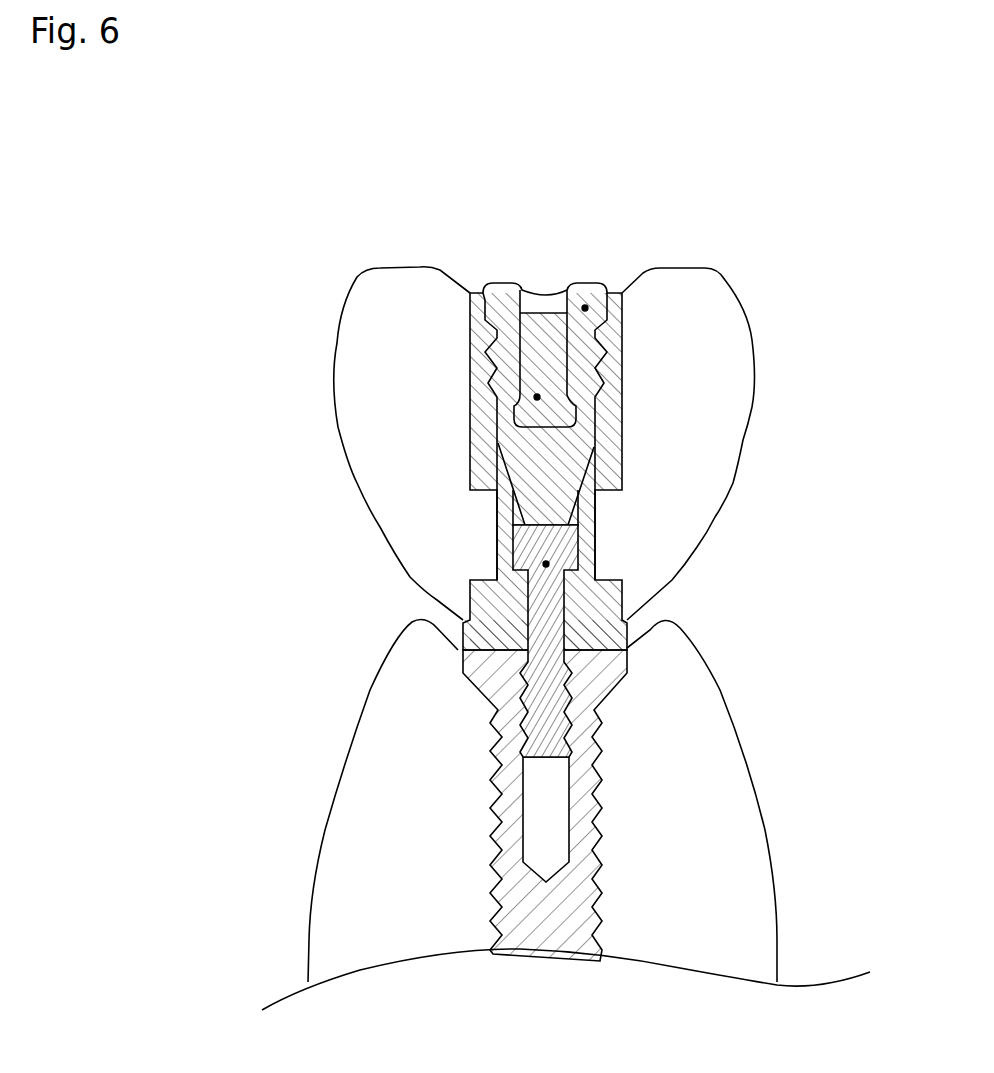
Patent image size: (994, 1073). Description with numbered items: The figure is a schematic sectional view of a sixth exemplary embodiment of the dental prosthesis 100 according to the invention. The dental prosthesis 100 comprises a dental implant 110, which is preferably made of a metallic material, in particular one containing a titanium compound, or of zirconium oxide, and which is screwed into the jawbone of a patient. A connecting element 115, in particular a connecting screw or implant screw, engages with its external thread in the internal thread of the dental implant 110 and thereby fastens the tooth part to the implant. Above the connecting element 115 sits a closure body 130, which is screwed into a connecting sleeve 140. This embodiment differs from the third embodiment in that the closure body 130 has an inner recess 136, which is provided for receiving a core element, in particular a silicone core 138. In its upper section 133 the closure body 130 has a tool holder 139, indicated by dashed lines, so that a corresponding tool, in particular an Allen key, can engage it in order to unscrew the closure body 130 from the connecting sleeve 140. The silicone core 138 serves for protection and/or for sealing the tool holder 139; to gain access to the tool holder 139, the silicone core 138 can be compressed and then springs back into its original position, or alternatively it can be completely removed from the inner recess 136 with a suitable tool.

The dental prosthesis 100 is at (807, 143).
The dental implant 110 is at (690, 805).
The connecting element 115 is at (728, 587).
The closure body 130 is at (501, 344).
The upper section 133 is at (602, 324).
The inner recess 136 is at (695, 337).
The silicone core 138 is at (713, 369).
The tool holder 139 is at (564, 222).
The connecting sleeve 140 is at (431, 443).